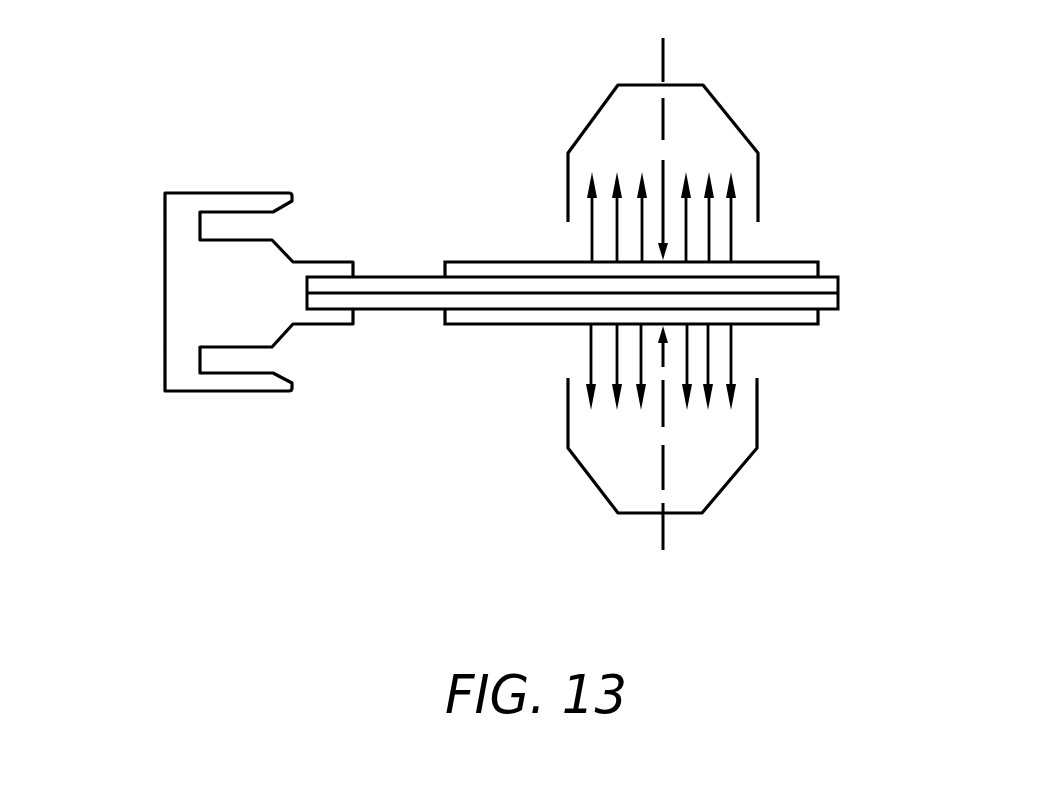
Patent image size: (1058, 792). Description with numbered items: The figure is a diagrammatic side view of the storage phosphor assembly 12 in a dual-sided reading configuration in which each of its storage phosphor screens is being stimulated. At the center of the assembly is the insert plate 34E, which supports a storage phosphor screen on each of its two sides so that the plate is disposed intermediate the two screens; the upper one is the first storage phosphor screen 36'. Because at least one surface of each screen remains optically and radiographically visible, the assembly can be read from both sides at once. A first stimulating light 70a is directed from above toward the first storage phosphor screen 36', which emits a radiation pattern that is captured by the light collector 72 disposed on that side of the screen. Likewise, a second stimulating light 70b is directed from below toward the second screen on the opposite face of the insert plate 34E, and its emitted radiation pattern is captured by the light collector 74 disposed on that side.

The storage phosphor assembly 12 is at (138, 279).
The insert plate 34E is at (838, 288).
The first storage phosphor screen 36' is at (652, 232).
The light collector 72 is at (575, 143).
The light collector 74 is at (573, 453).
The first stimulating light 70a is at (662, 60).
The second stimulating light 70b is at (660, 533).